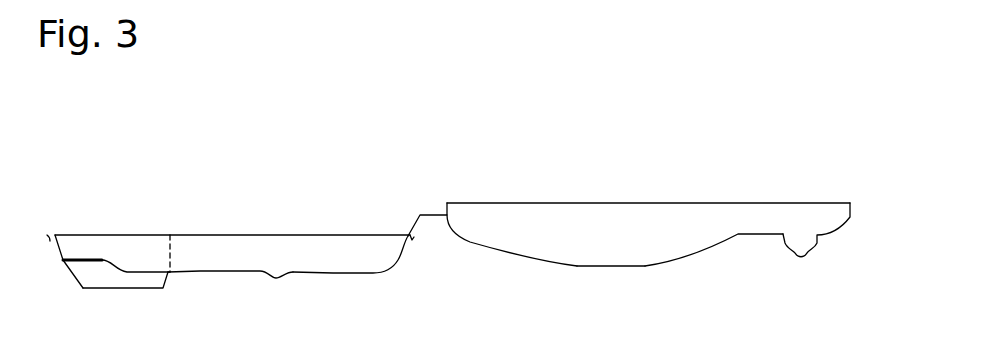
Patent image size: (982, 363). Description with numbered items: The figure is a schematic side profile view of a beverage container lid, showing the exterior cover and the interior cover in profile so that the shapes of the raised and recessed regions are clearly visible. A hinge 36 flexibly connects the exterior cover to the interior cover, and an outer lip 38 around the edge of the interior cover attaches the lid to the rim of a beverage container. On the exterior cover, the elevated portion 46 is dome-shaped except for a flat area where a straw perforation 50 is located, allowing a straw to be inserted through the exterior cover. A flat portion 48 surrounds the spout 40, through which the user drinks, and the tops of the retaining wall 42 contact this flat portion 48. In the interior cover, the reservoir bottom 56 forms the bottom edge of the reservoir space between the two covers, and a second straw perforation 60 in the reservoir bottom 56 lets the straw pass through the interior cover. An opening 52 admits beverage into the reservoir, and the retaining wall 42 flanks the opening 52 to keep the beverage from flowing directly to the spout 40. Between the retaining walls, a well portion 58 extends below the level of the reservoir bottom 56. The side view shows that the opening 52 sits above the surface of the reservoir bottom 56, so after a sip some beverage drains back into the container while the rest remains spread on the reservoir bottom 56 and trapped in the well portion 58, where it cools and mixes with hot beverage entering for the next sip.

The hinge 36 is at (423, 214).
The outer lip 38 is at (48, 237).
The spout 40 is at (818, 245).
The retaining wall 42 is at (125, 248).
The elevated portion 46 is at (552, 262).
The flat portion 48 is at (762, 234).
The straw perforation 50 is at (612, 266).
The opening 52 is at (87, 262).
The reservoir bottom 56 is at (333, 273).
The well portion 58 is at (132, 280).
The straw perforation 60 is at (275, 278).